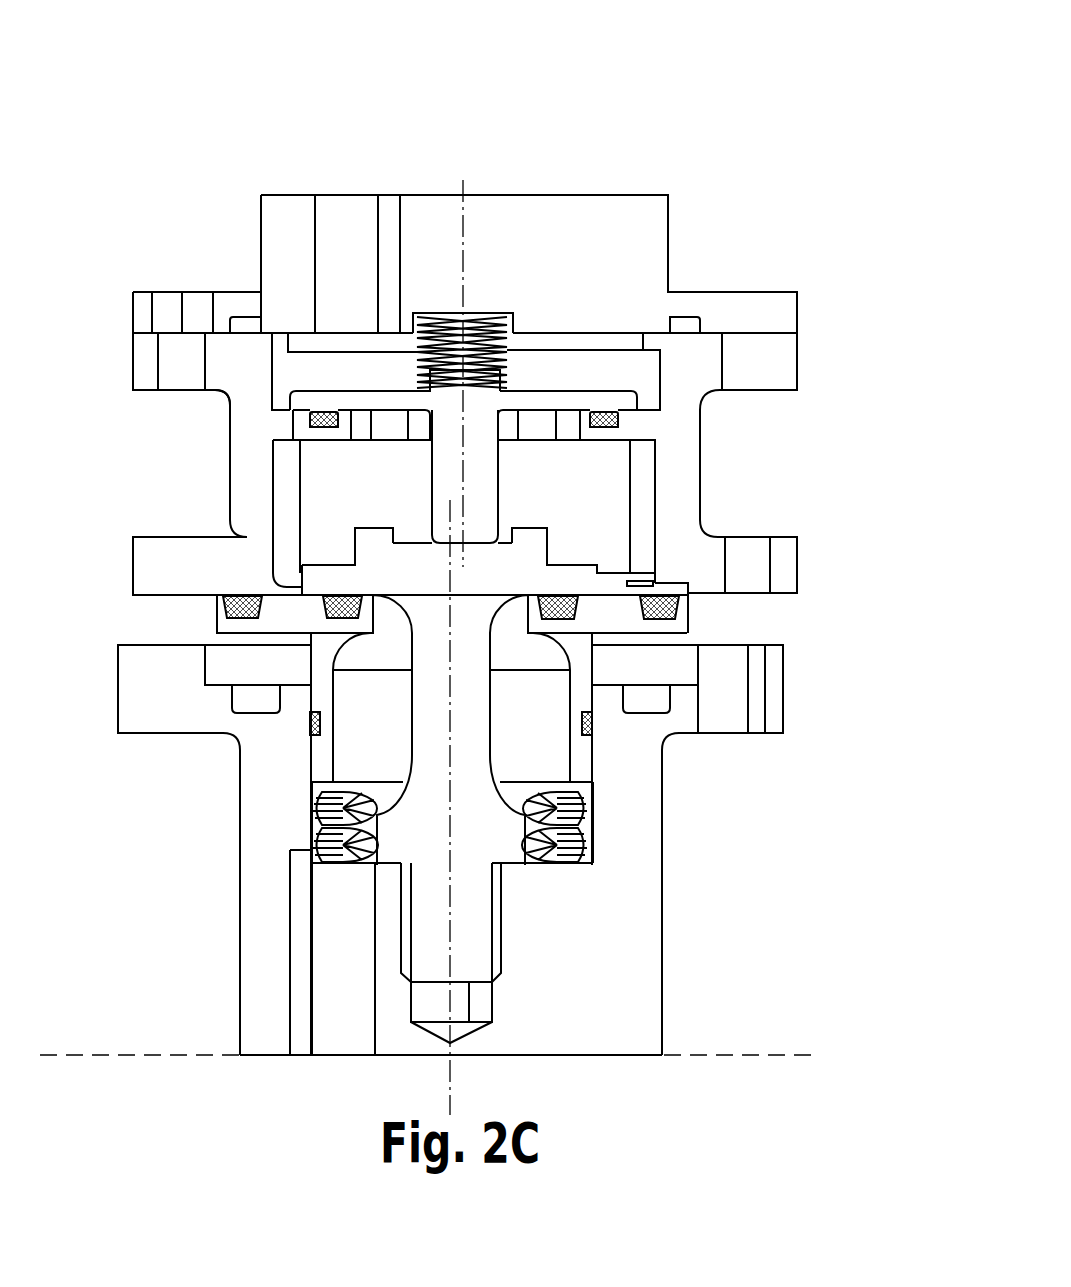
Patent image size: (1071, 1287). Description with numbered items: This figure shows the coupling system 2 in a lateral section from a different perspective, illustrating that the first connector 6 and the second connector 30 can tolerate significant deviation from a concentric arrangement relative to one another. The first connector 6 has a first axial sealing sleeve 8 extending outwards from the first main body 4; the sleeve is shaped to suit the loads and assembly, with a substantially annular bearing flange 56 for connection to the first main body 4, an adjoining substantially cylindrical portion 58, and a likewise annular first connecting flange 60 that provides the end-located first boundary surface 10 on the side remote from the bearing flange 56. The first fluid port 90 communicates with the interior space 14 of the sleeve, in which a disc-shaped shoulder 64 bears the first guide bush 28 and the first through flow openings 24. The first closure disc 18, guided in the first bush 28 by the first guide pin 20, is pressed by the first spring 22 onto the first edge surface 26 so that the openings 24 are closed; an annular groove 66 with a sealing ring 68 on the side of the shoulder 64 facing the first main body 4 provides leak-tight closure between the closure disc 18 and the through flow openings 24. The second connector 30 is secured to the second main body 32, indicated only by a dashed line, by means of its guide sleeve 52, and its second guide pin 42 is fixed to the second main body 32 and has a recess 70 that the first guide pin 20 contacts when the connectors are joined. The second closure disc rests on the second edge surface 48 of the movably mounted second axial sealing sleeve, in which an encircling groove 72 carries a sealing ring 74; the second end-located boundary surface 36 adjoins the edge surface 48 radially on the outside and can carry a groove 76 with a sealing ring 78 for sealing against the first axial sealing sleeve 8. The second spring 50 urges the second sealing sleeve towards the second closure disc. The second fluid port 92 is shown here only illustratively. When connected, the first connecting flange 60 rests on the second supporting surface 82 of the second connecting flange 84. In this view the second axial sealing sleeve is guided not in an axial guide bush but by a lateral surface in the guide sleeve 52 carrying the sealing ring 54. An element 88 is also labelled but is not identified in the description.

The coupling system 2 is at (691, 78).
The first main body 4 is at (552, 215).
The first connector 6 is at (748, 458).
The first axial sealing sleeve 8 is at (665, 468).
The first end-located boundary surface 10 is at (653, 578).
The interior space 14 is at (305, 368).
The first closure disc 18 is at (590, 393).
The first guide pin 20 is at (483, 498).
The first spring 22 is at (455, 320).
The first through flow openings 24 is at (393, 432).
The first edge surface 26 is at (264, 434).
The first guide bush 28 is at (503, 458).
The second connector 30 is at (728, 923).
The second main body 32 is at (85, 1053).
The second end-located boundary surface 36 is at (694, 689).
The second guide pin 42 is at (476, 927).
The second edge surface 48 is at (600, 645).
The second spring 50 is at (335, 800).
The guide sleeve 52 is at (652, 1000).
The sealing ring 54 is at (588, 737).
The annular bearing flange 56 is at (798, 406).
The cylindrical portion 58 is at (840, 387).
The first connecting flange 60 is at (800, 527).
The disc-shaped shoulder 64 is at (645, 413).
The annular groove 66 is at (300, 437).
The sealing ring 68 is at (298, 414).
The recess 70 is at (410, 527).
The encircling groove 72 is at (597, 596).
The sealing ring 74 is at (538, 596).
The groove 76 is at (690, 614).
The sealing ring 78 is at (682, 603).
The second supporting surface 82 is at (124, 628).
The second connecting flange 84 is at (782, 757).
The bolt 88 is at (218, 672).
The first fluid port 90 is at (342, 213).
The second fluid port 92 is at (338, 1030).